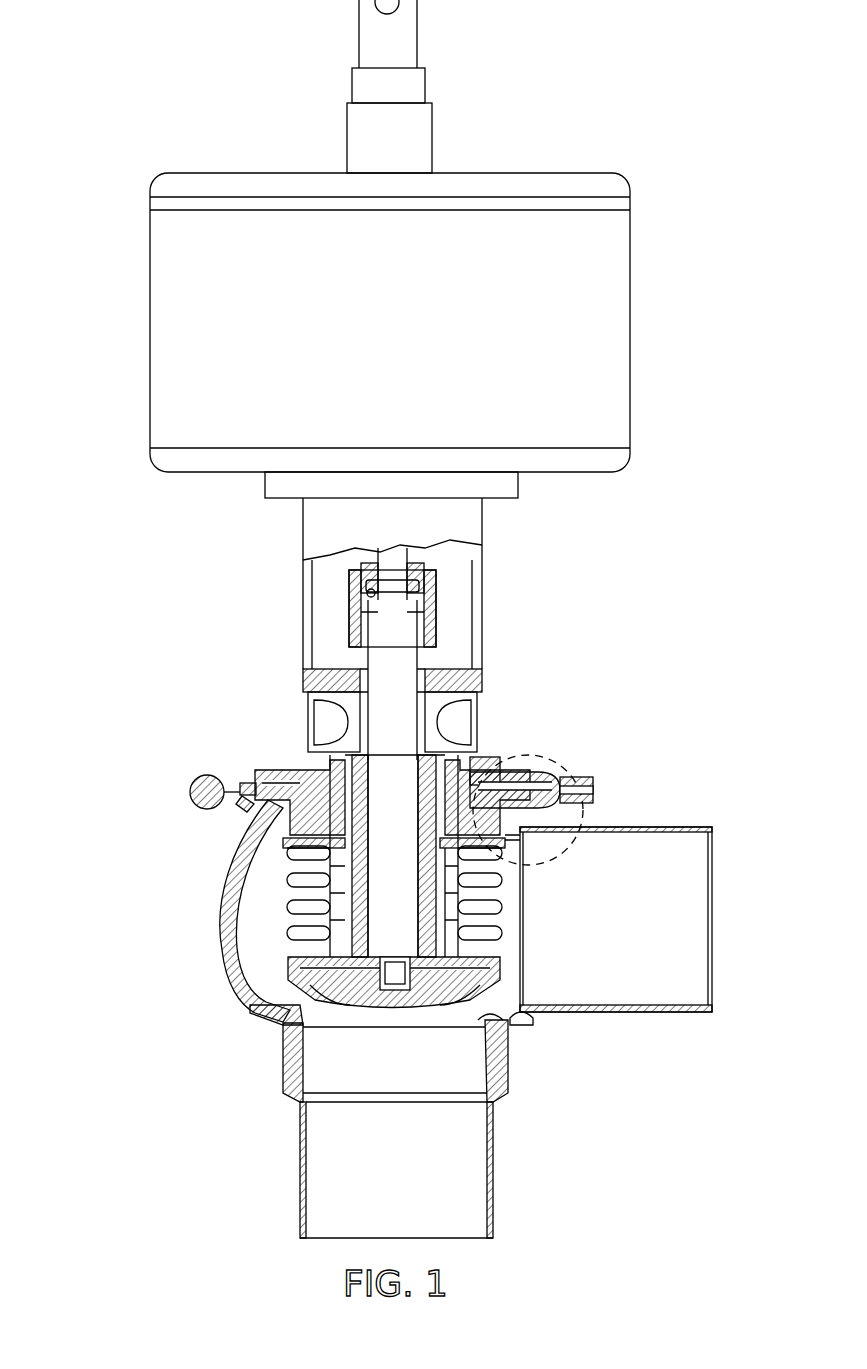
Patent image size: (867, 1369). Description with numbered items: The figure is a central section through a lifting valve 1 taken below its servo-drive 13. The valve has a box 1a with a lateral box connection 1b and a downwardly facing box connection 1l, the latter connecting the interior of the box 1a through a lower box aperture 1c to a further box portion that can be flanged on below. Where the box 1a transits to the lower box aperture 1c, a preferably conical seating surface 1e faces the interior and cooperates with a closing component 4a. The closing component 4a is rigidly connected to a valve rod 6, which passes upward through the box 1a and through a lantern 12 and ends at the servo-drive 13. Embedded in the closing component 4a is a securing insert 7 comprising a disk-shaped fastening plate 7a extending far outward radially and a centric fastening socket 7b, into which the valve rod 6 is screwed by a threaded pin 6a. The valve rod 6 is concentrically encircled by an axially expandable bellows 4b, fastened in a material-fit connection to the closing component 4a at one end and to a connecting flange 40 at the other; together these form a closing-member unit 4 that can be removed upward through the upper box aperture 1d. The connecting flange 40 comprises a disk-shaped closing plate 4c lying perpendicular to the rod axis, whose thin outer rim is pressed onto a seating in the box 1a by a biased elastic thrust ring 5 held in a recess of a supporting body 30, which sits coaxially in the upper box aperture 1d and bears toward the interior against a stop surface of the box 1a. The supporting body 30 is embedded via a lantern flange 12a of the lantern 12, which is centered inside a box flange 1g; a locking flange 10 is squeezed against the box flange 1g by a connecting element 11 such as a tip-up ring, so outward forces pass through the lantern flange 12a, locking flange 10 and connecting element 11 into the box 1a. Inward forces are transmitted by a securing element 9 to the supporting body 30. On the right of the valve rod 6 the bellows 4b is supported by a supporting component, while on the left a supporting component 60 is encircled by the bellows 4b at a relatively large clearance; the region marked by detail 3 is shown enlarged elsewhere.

The lifting valve 1 is at (408, 1006).
The box 1a is at (232, 970).
The lateral box connection 1b is at (663, 825).
The lower box aperture 1c is at (402, 1073).
The upper box aperture 1d is at (572, 806).
The seating surface 1e is at (483, 1030).
The box flange 1g is at (247, 805).
The downwardly facing box connection 1l is at (288, 1063).
The seal region 3 is at (553, 763).
The closing-member unit 4 is at (515, 887).
The closing component 4a is at (263, 1015).
The bellows 4b is at (500, 908).
The closing plate 4c is at (283, 840).
The elastic thrust ring 5 is at (540, 840).
The valve rod 6 is at (400, 828).
The threaded pin 6a is at (395, 975).
The securing insert 7 is at (394, 1050).
The fastening plate 7a is at (337, 1010).
The fastening socket 7b is at (443, 1010).
The securing element 9 is at (508, 755).
The locking flange 10 is at (253, 768).
The connecting element 11 is at (207, 775).
The lantern 12 is at (274, 580).
The lantern flange 12a is at (268, 766).
The servo-drive 13 is at (134, 318).
The supporting body 30 is at (547, 758).
The connecting flange 40 is at (282, 845).
The supporting component 60 is at (327, 922).